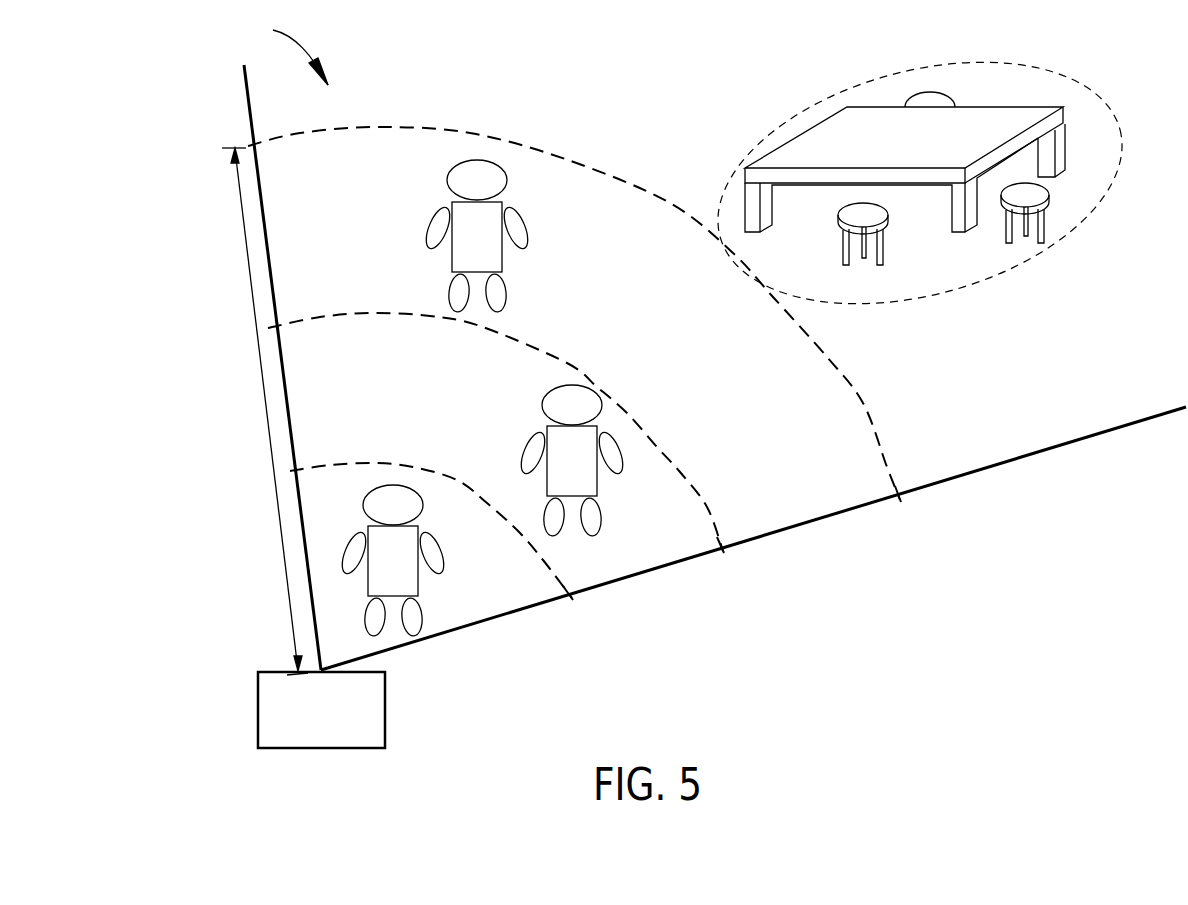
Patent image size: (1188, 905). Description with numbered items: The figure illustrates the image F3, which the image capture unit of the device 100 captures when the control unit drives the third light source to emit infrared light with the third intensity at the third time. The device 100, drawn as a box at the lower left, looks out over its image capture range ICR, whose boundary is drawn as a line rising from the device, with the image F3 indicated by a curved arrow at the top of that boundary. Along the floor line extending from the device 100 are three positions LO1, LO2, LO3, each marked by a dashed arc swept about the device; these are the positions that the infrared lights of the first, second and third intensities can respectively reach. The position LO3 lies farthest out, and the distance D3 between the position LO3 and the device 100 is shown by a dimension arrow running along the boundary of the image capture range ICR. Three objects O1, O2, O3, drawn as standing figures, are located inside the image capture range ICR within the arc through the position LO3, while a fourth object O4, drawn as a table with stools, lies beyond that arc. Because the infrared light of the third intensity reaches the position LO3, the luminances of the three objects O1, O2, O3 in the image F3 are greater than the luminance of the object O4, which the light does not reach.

The device 100 is at (258, 717).
The image capture range ICR is at (243, 77).
The distance D3 is at (265, 411).
The image F3 is at (286, 50).
The position LO1 is at (442, 547).
The position LO2 is at (510, 448).
The position LO3 is at (585, 330).
The object O1 is at (420, 582).
The object O2 is at (547, 478).
The object O3 is at (452, 263).
The object O4 is at (1087, 98).